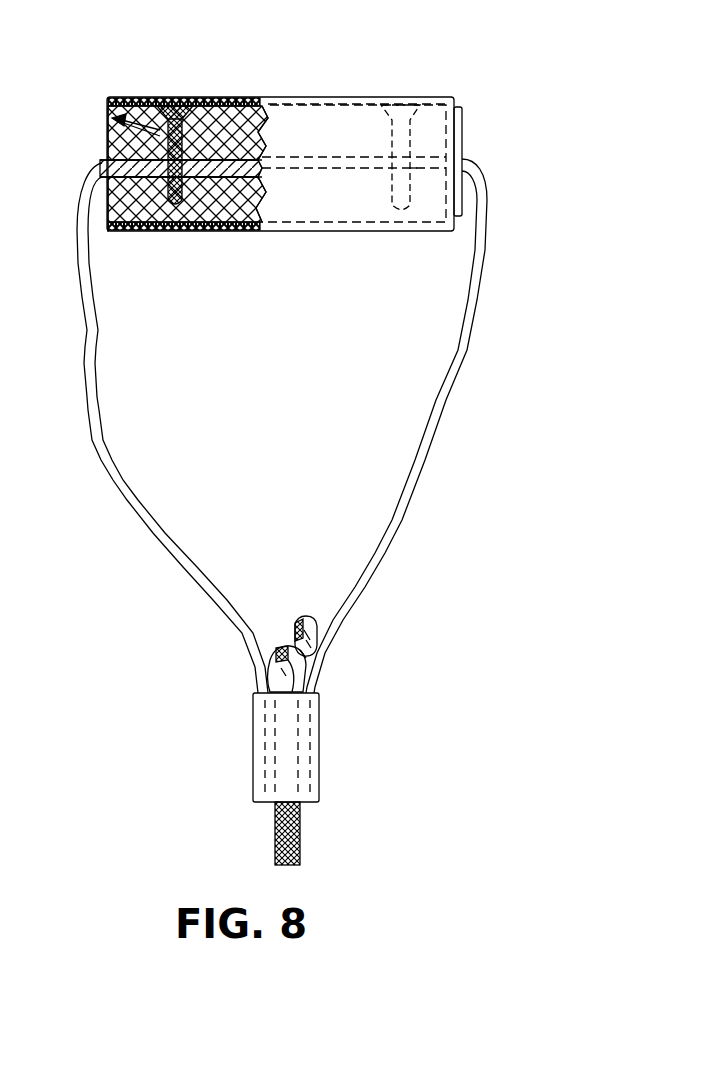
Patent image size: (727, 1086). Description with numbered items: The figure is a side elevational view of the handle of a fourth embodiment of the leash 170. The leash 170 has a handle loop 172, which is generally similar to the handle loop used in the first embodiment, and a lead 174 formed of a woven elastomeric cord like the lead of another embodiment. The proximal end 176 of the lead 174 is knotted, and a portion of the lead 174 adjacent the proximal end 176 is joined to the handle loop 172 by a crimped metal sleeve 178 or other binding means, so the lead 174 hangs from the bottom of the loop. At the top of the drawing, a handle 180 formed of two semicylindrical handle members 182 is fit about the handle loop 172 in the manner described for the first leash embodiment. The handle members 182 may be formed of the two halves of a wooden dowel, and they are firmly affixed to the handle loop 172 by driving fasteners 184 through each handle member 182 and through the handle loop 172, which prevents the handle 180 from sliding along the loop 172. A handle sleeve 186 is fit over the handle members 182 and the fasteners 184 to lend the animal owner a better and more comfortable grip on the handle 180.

The leash 170 is at (472, 476).
The handle loop 172 is at (460, 349).
The lead 174 is at (300, 832).
The proximal end 176 is at (282, 650).
The crimped metal sleeve 178 is at (320, 738).
The handle 180 is at (222, 100).
The handle members 182 is at (108, 130).
The fasteners 184 is at (166, 100).
The handle sleeve 186 is at (300, 99).